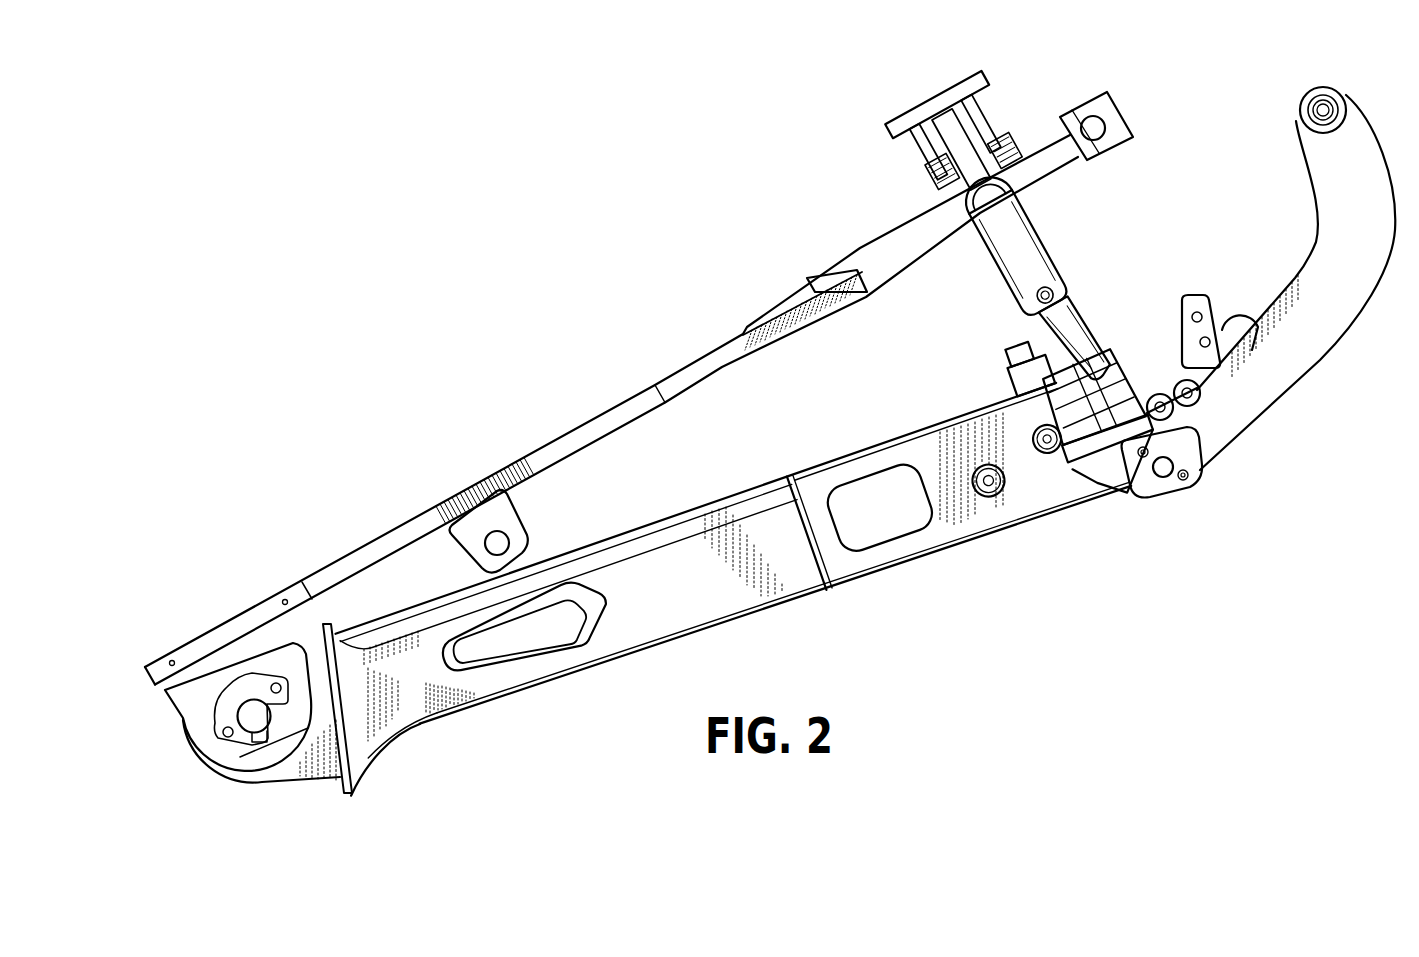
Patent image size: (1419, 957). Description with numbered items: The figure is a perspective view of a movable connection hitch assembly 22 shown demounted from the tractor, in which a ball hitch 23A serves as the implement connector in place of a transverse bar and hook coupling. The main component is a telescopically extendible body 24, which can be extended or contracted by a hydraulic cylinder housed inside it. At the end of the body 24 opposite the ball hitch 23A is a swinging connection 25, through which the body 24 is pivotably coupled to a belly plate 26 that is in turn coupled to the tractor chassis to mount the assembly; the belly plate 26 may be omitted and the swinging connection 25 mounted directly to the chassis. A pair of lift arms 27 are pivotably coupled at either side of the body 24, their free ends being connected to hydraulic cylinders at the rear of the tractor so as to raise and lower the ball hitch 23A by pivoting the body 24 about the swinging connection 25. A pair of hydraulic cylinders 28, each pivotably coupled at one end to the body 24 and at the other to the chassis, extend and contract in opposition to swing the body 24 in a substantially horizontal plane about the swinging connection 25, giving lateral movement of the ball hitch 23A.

The movable connection hitch assembly 22 is at (465, 308).
The ball hitch 23A is at (1233, 312).
The telescopically extendible body 24 is at (650, 622).
The swinging connection 25 is at (254, 718).
The belly plate 26 is at (630, 403).
The lift arms 27 is at (1337, 170).
The hydraulic cylinders 28 is at (1055, 262).